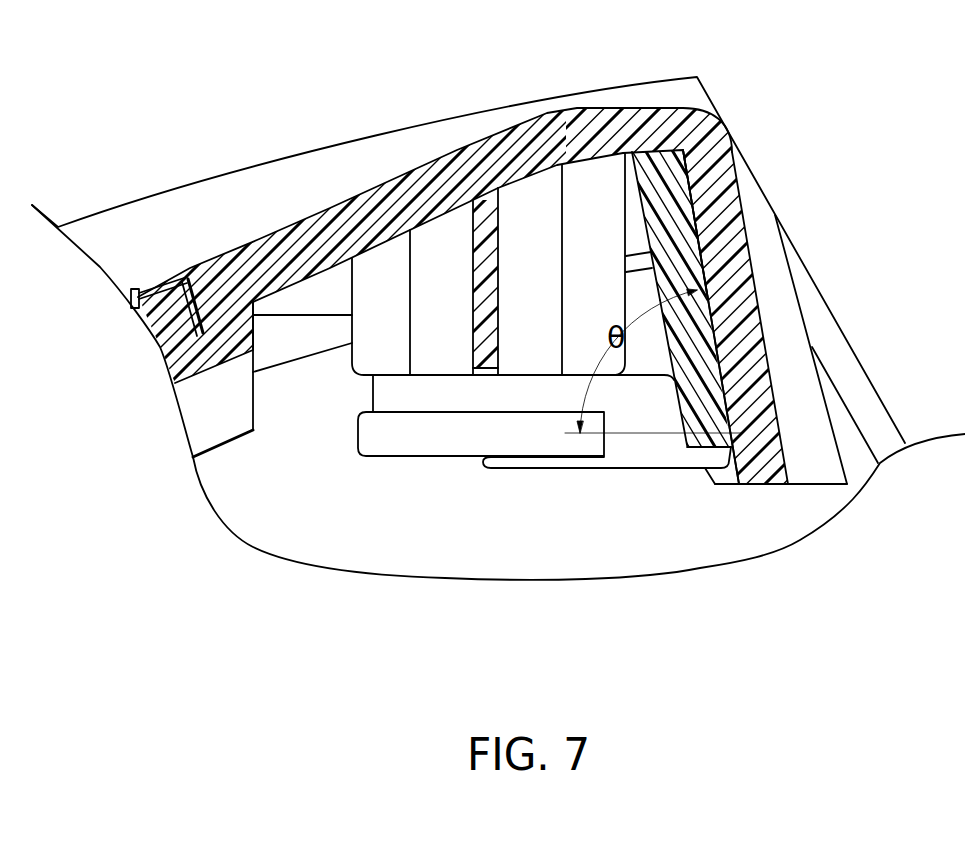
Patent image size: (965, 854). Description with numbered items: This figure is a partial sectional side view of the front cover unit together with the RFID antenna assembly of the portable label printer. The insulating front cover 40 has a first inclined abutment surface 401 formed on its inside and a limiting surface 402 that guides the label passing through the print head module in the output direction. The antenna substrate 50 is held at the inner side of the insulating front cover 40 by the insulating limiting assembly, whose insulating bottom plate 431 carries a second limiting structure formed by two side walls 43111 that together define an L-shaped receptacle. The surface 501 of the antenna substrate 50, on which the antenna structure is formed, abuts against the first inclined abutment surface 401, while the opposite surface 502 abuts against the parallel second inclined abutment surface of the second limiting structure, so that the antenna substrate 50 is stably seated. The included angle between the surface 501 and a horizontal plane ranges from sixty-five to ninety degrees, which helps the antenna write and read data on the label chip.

The insulating front cover 40 is at (665, 231).
The first inclined abutment surface 401 is at (724, 302).
The limiting surface 402 is at (761, 245).
The antenna substrate 50 is at (687, 233).
The surface 501 is at (671, 179).
The another surface 502 is at (645, 236).
The insulating bottom plate 431 is at (690, 458).
The side walls 43111 is at (657, 344).